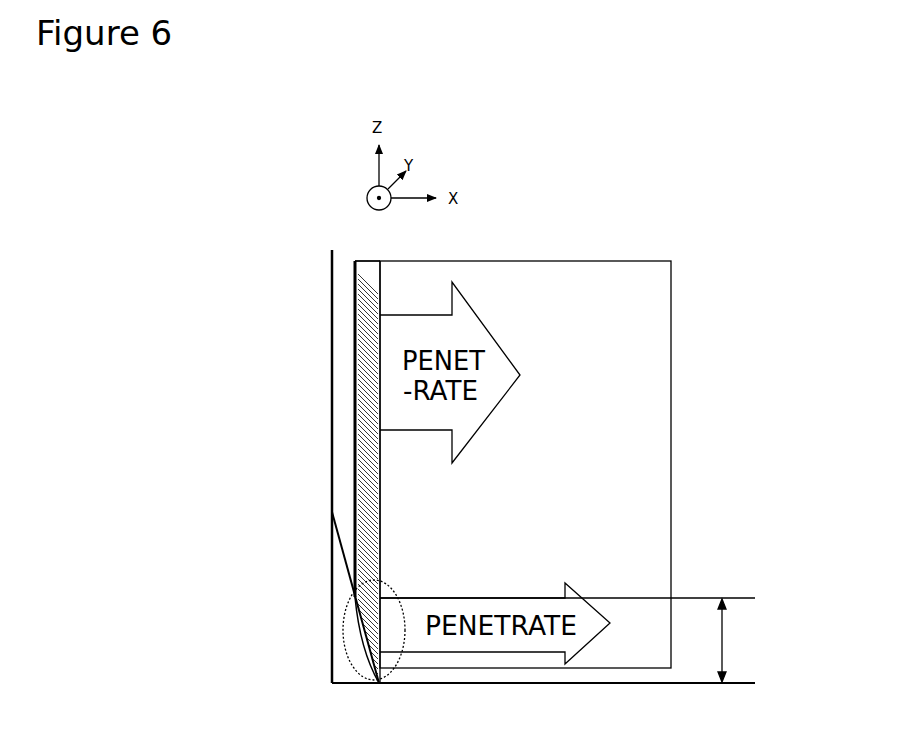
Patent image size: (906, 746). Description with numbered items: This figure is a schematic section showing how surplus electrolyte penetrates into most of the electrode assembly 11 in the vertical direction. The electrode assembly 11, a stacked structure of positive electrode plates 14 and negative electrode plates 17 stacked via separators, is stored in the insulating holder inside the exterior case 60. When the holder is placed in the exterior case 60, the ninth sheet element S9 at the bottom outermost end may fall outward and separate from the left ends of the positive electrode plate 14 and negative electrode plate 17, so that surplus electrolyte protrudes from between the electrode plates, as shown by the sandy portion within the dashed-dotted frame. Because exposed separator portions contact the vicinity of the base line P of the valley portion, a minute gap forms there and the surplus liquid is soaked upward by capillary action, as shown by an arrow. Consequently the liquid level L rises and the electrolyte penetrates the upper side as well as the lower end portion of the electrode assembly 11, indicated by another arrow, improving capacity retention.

The exterior case 60 is at (366, 318).
The electrode assembly 11 is at (644, 355).
The positive electrode plate 14 is at (645, 412).
The negative electrode plate 17 is at (525, 464).
The ninth sheet element S9 is at (337, 566).
The base line P is at (362, 380).
The liquid level L is at (371, 261).